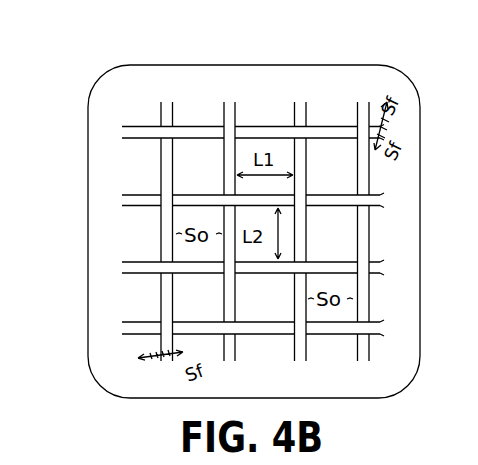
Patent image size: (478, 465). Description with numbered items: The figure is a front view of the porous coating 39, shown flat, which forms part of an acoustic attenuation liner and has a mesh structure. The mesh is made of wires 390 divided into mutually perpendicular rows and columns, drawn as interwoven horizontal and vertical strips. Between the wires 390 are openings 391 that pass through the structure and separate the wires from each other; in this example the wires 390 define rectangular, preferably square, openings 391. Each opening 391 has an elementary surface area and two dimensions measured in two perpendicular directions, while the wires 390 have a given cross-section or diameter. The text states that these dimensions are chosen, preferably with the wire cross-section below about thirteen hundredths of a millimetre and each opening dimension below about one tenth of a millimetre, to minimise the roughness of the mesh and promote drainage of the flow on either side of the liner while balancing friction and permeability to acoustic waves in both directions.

The porous coating 39 is at (225, 207).
The wires 390 is at (137, 132).
The openings 391 is at (188, 170).